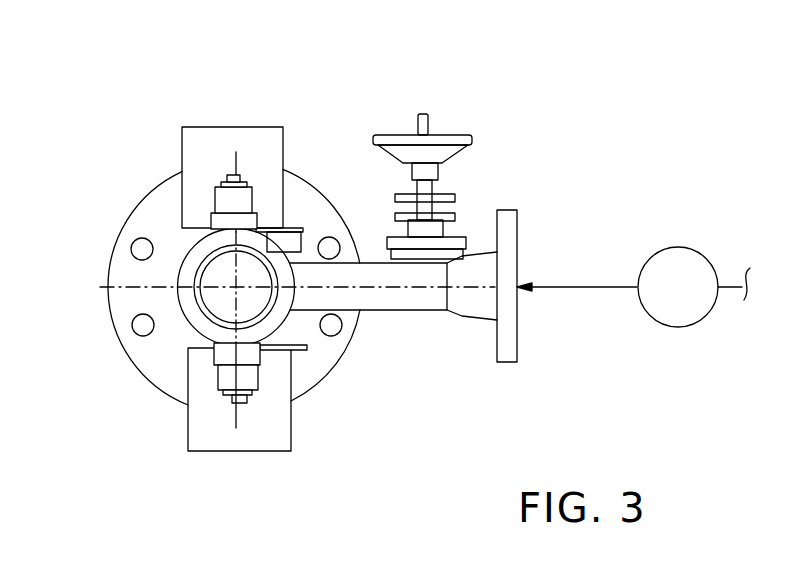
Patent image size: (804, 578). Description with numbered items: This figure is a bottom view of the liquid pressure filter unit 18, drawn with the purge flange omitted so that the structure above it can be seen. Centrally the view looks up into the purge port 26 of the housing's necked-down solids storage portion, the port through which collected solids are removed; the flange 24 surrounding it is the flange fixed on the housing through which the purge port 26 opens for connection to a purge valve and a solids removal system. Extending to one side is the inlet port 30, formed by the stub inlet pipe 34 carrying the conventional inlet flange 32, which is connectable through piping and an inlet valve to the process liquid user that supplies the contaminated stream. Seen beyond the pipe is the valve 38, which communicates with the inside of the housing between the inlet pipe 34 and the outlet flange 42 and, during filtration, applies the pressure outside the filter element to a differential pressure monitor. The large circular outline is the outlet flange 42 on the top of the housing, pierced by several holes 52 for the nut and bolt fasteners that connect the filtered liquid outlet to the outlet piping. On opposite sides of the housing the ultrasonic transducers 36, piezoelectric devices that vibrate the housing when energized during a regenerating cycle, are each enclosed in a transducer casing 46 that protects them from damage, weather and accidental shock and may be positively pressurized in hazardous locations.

The filter unit 18 is at (131, 112).
The flange 24 is at (190, 324).
The purge port 26 is at (208, 307).
The inlet port 30 is at (518, 300).
The inlet flange 32 is at (507, 210).
The stub inlet pipe 34 is at (412, 311).
The ultrasonic transducer 36 is at (219, 188).
The valve 38 is at (452, 135).
The outlet flange 42 is at (122, 232).
The transducer casing 46 is at (253, 127).
The holes 52 is at (140, 238).